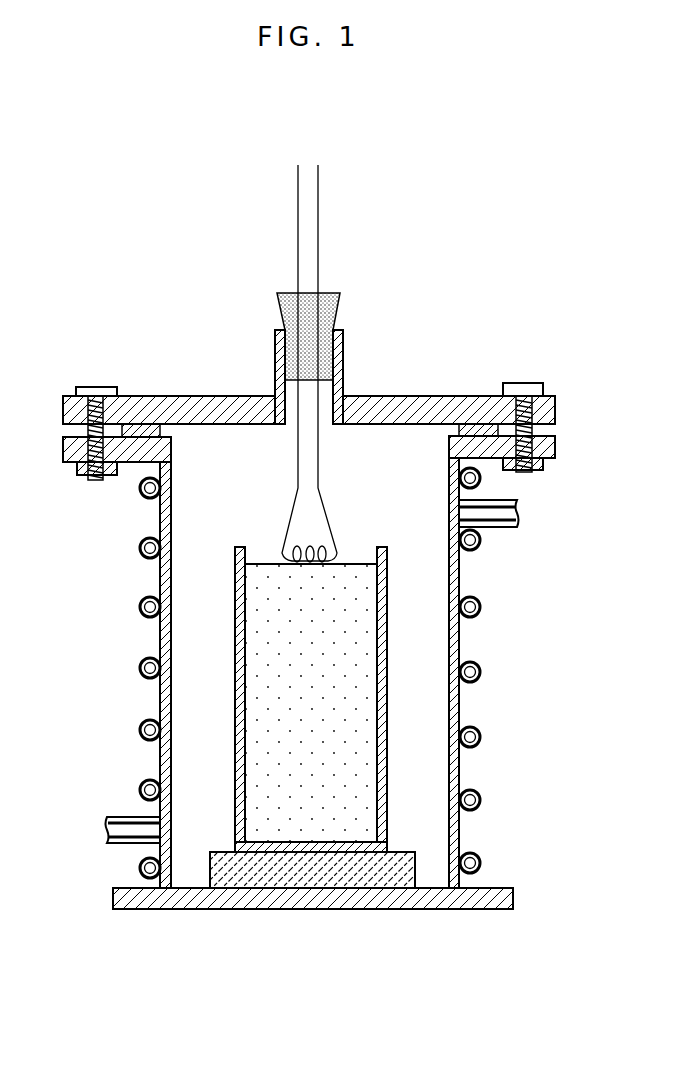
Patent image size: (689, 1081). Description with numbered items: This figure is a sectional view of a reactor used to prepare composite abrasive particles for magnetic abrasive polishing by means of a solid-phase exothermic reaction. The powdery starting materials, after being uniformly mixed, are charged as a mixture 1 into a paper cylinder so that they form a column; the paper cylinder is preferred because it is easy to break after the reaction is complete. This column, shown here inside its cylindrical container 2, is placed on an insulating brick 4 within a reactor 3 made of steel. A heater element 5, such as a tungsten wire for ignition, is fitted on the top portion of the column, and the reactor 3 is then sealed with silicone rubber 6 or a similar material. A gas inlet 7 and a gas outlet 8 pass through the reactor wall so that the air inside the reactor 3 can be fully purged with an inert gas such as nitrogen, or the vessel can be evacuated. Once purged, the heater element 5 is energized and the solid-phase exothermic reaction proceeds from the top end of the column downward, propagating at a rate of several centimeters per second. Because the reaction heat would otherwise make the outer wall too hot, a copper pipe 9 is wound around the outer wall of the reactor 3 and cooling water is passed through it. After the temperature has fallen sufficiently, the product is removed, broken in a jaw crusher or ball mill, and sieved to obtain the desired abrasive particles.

The mixture of the material powders 1 is at (320, 713).
The crucible 2 is at (388, 650).
The reactor 3 is at (460, 705).
The insulating brick 4 is at (308, 870).
The heater element 5 is at (333, 512).
The silicone rubber 6 is at (340, 293).
The gas inlet 7 is at (95, 830).
The gas outlet 8 is at (527, 513).
The copper pipe 9 is at (143, 596).